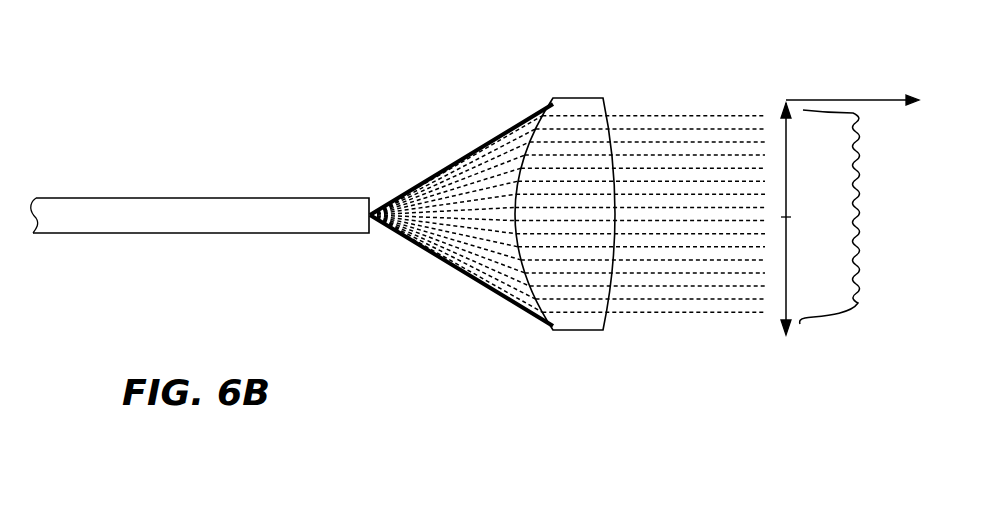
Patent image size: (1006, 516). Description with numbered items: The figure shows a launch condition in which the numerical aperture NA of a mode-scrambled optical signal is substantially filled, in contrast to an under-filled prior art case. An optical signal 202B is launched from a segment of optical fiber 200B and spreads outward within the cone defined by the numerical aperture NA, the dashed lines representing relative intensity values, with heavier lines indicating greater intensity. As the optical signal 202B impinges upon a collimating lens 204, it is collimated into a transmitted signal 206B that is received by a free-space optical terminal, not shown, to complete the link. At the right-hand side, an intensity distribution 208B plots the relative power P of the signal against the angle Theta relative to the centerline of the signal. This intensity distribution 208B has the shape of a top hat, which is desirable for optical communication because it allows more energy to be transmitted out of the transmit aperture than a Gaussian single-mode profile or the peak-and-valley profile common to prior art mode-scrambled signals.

The optical fiber segment 200B is at (180, 223).
The optical signal 202B is at (445, 230).
The collimating lens 204 is at (577, 320).
The transmitted signal 206B is at (642, 280).
The intensity distribution 208B is at (886, 316).
The numerical aperture NA is at (452, 338).